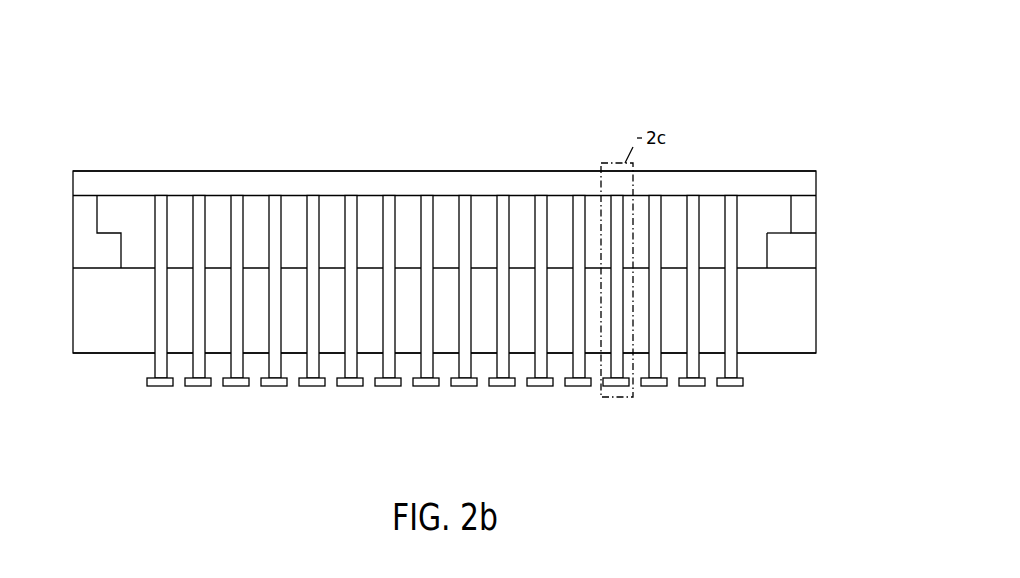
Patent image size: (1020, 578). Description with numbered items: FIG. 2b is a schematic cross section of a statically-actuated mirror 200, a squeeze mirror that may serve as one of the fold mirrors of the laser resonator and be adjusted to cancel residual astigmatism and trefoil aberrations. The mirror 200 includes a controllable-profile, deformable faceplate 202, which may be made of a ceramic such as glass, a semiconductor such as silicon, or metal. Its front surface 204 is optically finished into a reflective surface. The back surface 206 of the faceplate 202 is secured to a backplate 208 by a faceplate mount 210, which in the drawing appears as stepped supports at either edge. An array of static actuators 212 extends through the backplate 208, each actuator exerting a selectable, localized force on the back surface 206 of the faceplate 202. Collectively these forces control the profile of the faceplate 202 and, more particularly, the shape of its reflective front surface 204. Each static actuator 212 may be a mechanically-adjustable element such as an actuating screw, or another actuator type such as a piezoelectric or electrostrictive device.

The statically-actuated mirror 200 is at (433, 63).
The faceplate 202 is at (379, 157).
The front surface 204 is at (444, 154).
The back surface 206 is at (113, 196).
The backplate 208 is at (110, 353).
The faceplate mount 210 is at (840, 223).
The static actuators 212 is at (445, 322).